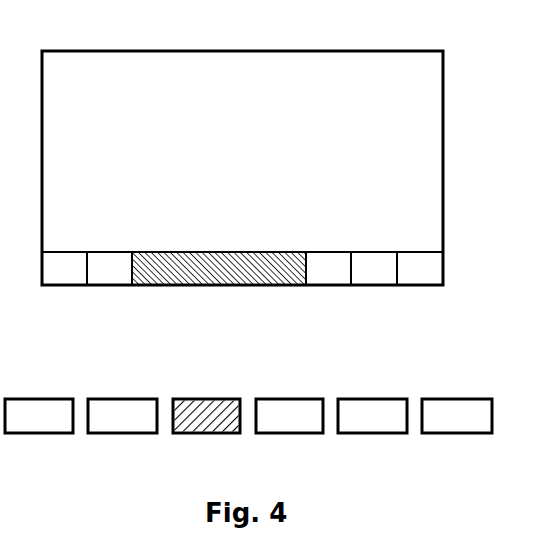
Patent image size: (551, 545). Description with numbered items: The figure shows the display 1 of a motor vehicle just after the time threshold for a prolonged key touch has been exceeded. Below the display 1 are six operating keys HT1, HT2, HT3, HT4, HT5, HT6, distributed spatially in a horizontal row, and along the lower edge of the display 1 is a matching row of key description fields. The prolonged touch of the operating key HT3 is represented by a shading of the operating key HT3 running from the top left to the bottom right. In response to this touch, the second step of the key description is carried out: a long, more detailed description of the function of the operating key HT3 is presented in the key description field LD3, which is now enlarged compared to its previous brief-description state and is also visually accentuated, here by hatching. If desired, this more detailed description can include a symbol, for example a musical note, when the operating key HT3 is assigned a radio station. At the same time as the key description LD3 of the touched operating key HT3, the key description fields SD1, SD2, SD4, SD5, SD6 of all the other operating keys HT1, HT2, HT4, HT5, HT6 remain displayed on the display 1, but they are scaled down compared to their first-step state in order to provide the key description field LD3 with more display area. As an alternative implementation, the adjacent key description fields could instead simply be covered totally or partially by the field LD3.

The display 1 is at (430, 85).
The key description field SD1 is at (64, 268).
The key description field SD2 is at (109, 268).
The key description field LD3 is at (219, 268).
The key description field SD4 is at (328, 268).
The key description field SD5 is at (374, 268).
The key description field SD6 is at (420, 268).
The operating key HT1 is at (39, 416).
The operating key HT2 is at (122, 416).
The operating key HT3 is at (206, 416).
The operating key HT4 is at (289, 416).
The operating key HT5 is at (372, 416).
The operating key HT6 is at (457, 416).